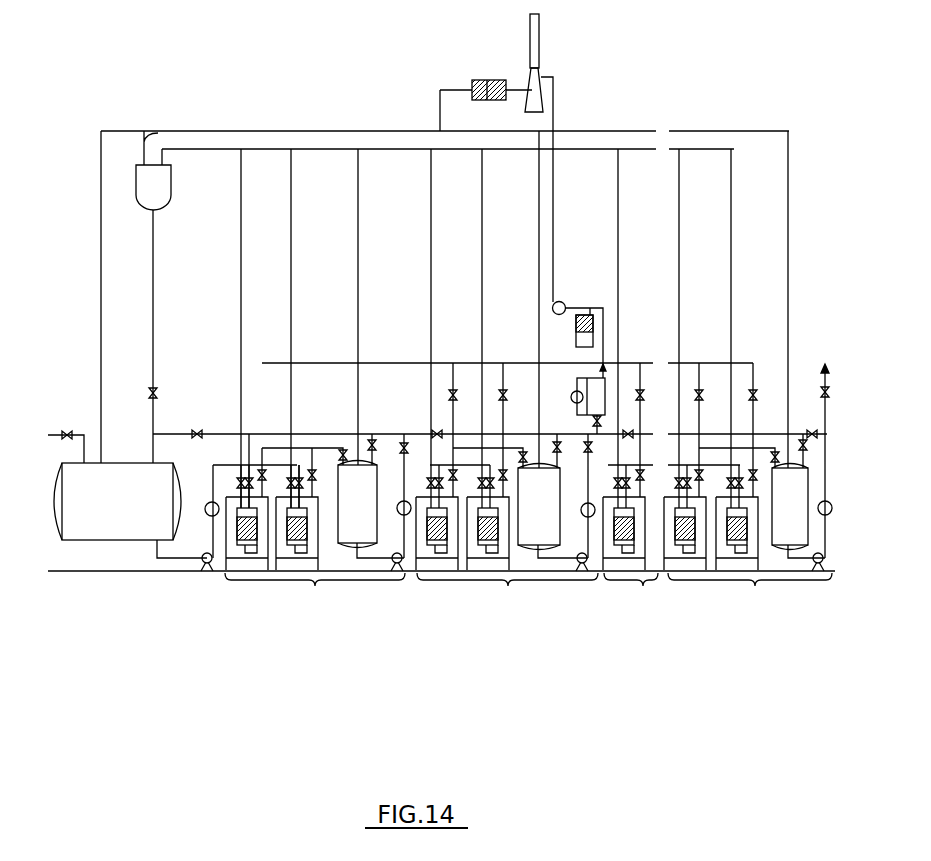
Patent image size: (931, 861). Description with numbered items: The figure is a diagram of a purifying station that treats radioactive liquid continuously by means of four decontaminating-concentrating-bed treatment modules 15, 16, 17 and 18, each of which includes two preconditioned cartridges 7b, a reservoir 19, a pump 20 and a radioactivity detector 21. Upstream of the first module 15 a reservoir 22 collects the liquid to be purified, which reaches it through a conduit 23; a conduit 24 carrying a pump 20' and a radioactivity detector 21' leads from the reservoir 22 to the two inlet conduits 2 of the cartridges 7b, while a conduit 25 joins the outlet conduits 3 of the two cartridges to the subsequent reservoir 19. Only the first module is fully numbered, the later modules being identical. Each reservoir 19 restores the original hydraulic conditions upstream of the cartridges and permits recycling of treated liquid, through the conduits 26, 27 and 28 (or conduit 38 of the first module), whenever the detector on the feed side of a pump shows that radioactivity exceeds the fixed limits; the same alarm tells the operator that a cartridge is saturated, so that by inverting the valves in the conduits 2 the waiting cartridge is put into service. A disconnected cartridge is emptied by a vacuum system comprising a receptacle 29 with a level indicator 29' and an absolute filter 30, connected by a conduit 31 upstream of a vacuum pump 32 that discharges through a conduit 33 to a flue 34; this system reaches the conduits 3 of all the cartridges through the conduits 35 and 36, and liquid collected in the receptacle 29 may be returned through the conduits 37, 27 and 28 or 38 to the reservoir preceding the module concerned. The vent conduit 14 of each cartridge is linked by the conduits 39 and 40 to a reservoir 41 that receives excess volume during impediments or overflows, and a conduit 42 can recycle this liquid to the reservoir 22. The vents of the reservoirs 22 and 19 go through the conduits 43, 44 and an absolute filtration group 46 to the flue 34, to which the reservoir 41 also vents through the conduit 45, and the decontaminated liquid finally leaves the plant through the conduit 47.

The inlet conduit 2 is at (298, 478).
The conduit 3 is at (263, 492).
The preconditioned cartridge 7b is at (247, 559).
The vent conduit 14 is at (237, 492).
The first treatment module 15 is at (315, 592).
The treatment module 16 is at (507, 523).
The treatment module 17 is at (633, 554).
The treatment module 18 is at (748, 523).
The reservoir 19 is at (348, 519).
The pump 20 is at (397, 602).
The pump 20' is at (207, 602).
The radioactivity detector 21 is at (393, 489).
The radioactivity detector 21' is at (196, 529).
The reservoir 22 is at (103, 513).
The conduit 23 is at (52, 433).
The conduit 24 is at (212, 478).
The conduit 25 is at (334, 447).
The conduit 26 is at (409, 452).
The conduit 27 is at (380, 432).
The conduit 28 is at (150, 445).
The receptacle 29 is at (628, 370).
The level indicator 29' is at (560, 382).
The absolute filter 30 is at (578, 336).
The conduit 31 is at (606, 323).
The vacuum pump 32 is at (565, 301).
The conduit 33 is at (556, 218).
The flue 34 is at (541, 70).
The conduit 35 is at (606, 368).
The conduit 36 is at (510, 360).
The conduit 37 is at (592, 423).
The conduit 38 is at (376, 455).
The conduit 39 is at (240, 340).
The conduit 40 is at (198, 148).
The reservoir 41 is at (142, 200).
The conduit 42 is at (155, 298).
The conduit 43 is at (103, 345).
The conduit 44 is at (260, 130).
The conduit 45 is at (157, 128).
The absolute filtration group 46 is at (489, 80).
The conduit 47 is at (820, 375).